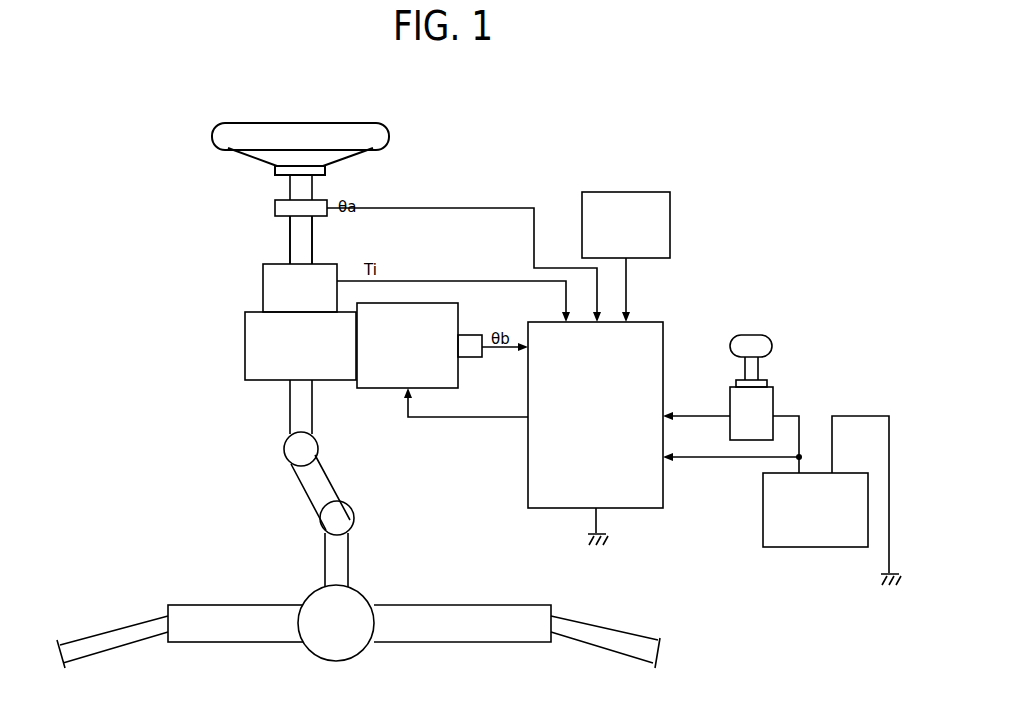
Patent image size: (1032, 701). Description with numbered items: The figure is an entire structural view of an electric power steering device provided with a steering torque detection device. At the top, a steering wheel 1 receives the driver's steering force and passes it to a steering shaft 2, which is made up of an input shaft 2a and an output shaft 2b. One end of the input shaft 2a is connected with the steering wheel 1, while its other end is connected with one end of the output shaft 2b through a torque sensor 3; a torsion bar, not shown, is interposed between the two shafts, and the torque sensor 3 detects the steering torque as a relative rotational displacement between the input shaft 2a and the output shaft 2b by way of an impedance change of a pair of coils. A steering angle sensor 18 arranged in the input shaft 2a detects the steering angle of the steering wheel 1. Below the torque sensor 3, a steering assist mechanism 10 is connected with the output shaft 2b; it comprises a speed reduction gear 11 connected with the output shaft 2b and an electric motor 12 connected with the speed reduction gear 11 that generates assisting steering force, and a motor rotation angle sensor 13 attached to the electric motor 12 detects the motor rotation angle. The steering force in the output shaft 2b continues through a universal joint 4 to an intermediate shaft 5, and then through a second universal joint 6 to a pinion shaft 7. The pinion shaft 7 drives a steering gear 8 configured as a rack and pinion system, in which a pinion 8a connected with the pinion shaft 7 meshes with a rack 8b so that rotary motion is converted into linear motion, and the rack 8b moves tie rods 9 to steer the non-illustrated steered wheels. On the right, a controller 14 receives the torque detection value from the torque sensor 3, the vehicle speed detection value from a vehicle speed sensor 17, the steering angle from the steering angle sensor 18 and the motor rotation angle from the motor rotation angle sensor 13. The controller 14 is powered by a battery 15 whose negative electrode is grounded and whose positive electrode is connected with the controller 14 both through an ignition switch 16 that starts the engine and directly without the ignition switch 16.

The steering wheel 1 is at (318, 122).
The steering shaft 2 is at (266, 190).
The input shaft 2a is at (290, 249).
The output shaft 2b is at (290, 414).
The torque sensor 3 is at (263, 283).
The universal joint 4 is at (284, 449).
The intermediate shaft 5 is at (310, 487).
The universal joint 6 is at (322, 516).
The pinion shaft 7 is at (325, 551).
The steering gear 8 is at (359, 597).
The pinion 8a is at (312, 597).
The rack 8b is at (462, 605).
The tie rods 9 is at (122, 622).
The steering assist mechanism 10 is at (336, 349).
The speed reduction gear 11 is at (245, 345).
The electric motor 12 is at (462, 316).
The motor rotation angle sensor 13 is at (470, 357).
The controller 14 is at (664, 333).
The battery 15 is at (812, 548).
The ignition switch 16 is at (774, 397).
The vehicle speed sensor 17 is at (583, 192).
The steering angle sensor 18 is at (275, 206).